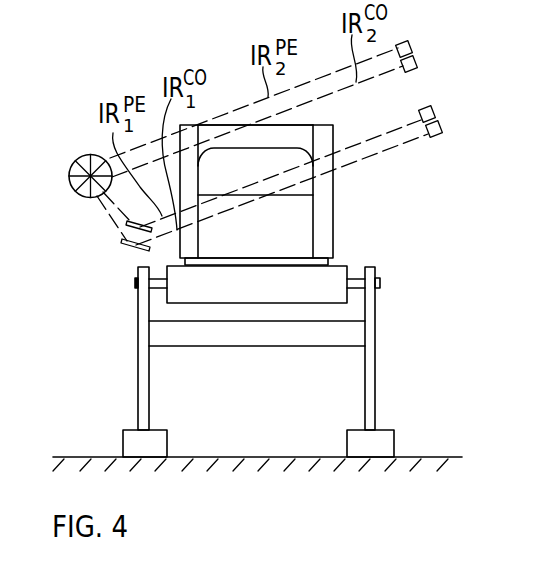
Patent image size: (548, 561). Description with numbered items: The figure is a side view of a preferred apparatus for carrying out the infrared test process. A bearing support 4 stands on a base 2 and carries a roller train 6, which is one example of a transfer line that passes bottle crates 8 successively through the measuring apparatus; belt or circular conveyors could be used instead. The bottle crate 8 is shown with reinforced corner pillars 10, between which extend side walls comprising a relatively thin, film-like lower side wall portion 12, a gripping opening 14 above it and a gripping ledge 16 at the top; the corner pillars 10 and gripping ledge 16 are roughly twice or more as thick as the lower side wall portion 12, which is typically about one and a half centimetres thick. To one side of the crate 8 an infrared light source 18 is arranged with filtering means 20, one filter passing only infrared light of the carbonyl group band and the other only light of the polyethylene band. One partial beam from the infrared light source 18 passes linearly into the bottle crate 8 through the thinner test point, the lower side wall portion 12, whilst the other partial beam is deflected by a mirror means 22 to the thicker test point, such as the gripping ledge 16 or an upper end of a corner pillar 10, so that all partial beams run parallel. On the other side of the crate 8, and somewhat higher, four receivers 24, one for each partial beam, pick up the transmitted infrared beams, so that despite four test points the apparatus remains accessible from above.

The base 2 is at (428, 456).
The bearing support 4 is at (142, 384).
The roller train 6 is at (254, 294).
The bottle crate 8 is at (350, 203).
The corner pillar 10 is at (192, 242).
The lower side wall portion 12 is at (304, 230).
The gripping opening 14 is at (304, 185).
The gripping ledge 16 is at (301, 132).
The infrared light source 18 is at (66, 192).
The filtering means 20 is at (84, 163).
The mirror means 22 is at (129, 259).
The receivers 24 is at (428, 55).